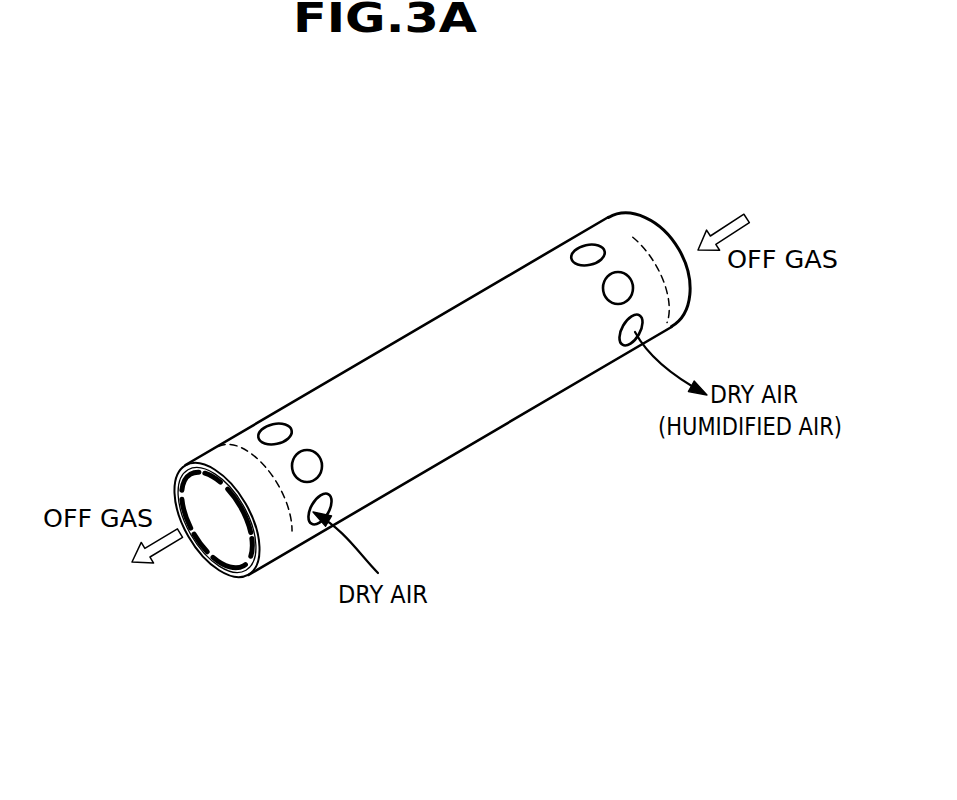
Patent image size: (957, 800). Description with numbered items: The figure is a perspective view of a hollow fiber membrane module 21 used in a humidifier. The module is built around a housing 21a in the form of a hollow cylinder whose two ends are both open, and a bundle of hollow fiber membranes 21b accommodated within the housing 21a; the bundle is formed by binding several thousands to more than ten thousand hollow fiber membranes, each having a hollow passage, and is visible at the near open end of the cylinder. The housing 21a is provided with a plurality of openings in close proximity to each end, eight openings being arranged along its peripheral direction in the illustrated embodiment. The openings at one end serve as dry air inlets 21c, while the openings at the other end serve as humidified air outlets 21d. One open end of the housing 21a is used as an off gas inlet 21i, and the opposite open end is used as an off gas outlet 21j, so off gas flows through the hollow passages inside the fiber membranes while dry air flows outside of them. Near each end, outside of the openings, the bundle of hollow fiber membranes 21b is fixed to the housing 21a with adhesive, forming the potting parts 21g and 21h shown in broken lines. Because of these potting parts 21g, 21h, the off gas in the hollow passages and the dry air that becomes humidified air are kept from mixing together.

The hollow fiber membrane module 21 is at (465, 400).
The housing 21a is at (416, 340).
The bundle of hollow fiber membranes 21b is at (227, 577).
The dry air inlets 21c is at (328, 522).
The humidified air outlets 21d is at (640, 335).
The potting part 21g is at (292, 531).
The potting part 21h is at (670, 298).
The off gas inlet 21i is at (680, 245).
The off gas outlet 21j is at (190, 478).